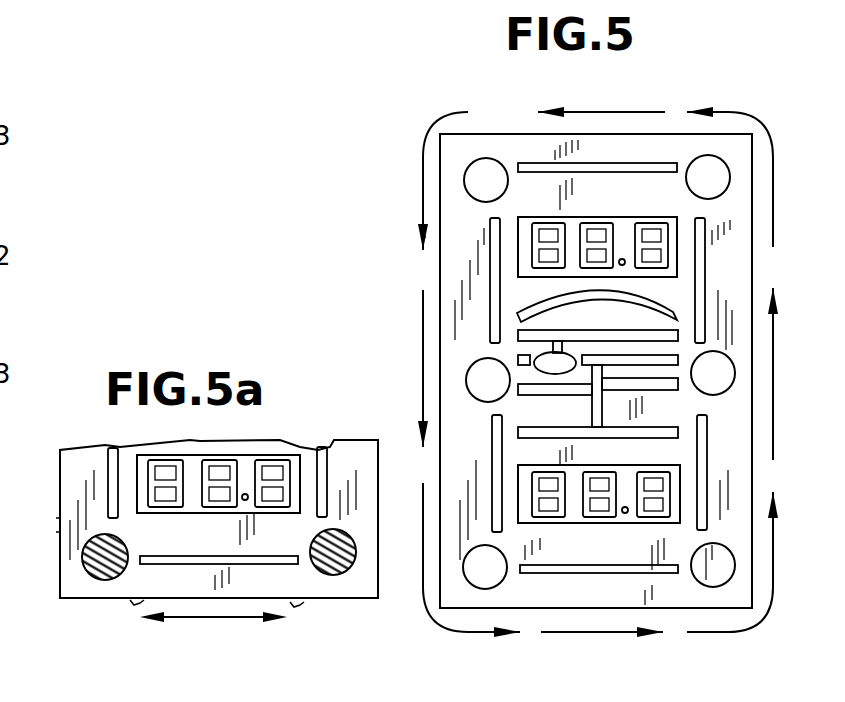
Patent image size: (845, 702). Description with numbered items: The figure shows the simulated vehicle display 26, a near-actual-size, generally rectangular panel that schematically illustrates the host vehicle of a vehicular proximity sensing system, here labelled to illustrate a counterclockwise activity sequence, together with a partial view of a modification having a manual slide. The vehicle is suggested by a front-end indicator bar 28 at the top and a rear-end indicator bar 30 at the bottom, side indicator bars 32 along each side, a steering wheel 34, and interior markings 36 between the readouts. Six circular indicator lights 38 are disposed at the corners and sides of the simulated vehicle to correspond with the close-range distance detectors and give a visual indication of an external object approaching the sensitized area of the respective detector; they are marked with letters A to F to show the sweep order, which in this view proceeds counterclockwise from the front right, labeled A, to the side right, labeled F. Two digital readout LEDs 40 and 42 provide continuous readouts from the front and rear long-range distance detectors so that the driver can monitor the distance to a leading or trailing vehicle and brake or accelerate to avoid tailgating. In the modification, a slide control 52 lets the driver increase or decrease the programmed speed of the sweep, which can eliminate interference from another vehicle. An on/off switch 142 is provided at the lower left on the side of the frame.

In FIG. 5, the simulated vehicle display 26 is at (529, 134).
In FIG. 5A, the simulated vehicle display 26 is at (273, 447).
In FIG. 5, the front-end indicator bar 28 is at (661, 164).
In FIG. 5, the rear-end indicator bar 30 is at (592, 574).
In FIG. 5A, the rear-end indicator bar 30 is at (210, 555).
In FIG. 5, the side indicator bars 32 is at (492, 264).
In FIG. 5A, the side indicator bars 32 is at (110, 447).
In FIG. 5, the steering wheel 34 is at (557, 345).
In FIG. 5, the interior markings 36 is at (566, 297).
In FIG. 5, the circular indicator lights 38 is at (464, 180).
In FIG. 5A, the circular indicator lights 38 is at (82, 565).
In FIG. 5, the digital readout LED 40 is at (622, 230).
In FIG. 5, the digital readout LED 42 is at (573, 518).
In FIG. 5A, the digital readout LED 42 is at (197, 459).
In FIG. 5A, the slide control 52 is at (130, 604).
In FIG. 5, the on/off switch 142 is at (437, 548).